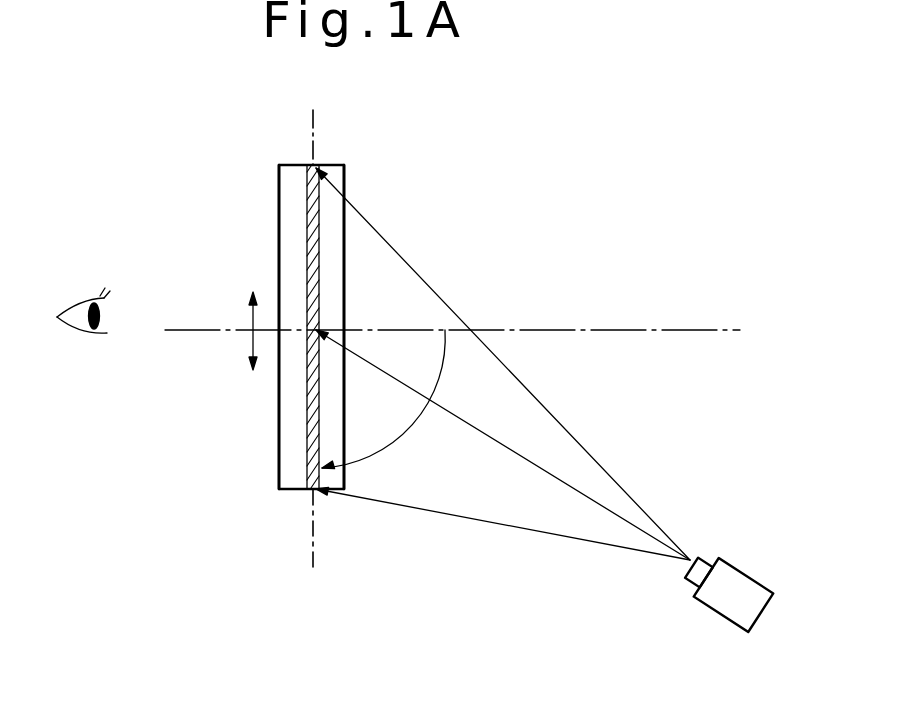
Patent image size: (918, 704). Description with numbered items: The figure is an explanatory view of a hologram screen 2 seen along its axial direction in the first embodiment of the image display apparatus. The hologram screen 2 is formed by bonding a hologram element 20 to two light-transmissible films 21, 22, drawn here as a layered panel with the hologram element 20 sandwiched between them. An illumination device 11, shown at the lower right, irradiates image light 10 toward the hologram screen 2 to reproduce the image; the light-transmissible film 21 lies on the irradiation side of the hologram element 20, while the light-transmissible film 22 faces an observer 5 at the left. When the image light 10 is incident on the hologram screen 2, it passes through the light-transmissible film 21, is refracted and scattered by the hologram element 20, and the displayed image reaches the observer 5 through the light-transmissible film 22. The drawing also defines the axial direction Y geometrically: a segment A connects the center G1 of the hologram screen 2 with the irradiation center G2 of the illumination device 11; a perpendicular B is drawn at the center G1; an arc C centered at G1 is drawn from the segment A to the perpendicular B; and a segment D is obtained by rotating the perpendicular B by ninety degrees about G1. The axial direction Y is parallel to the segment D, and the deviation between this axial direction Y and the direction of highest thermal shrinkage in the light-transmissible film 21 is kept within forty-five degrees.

The hologram screen 2 is at (340, 139).
The light-transmissible film 22 is at (290, 182).
The hologram element 20 is at (308, 227).
The light-transmissible film 21 is at (330, 270).
The image light 10 is at (568, 412).
The illumination device 11 is at (728, 600).
The observer 5 is at (83, 352).
The center of the hologram screen G1 is at (310, 331).
The irradiation center of the irradiation device G2 is at (694, 554).
The segment A is at (550, 476).
The perpendicular B is at (658, 328).
The arc C is at (440, 366).
The segment D is at (313, 548).
The axial direction Y is at (250, 320).